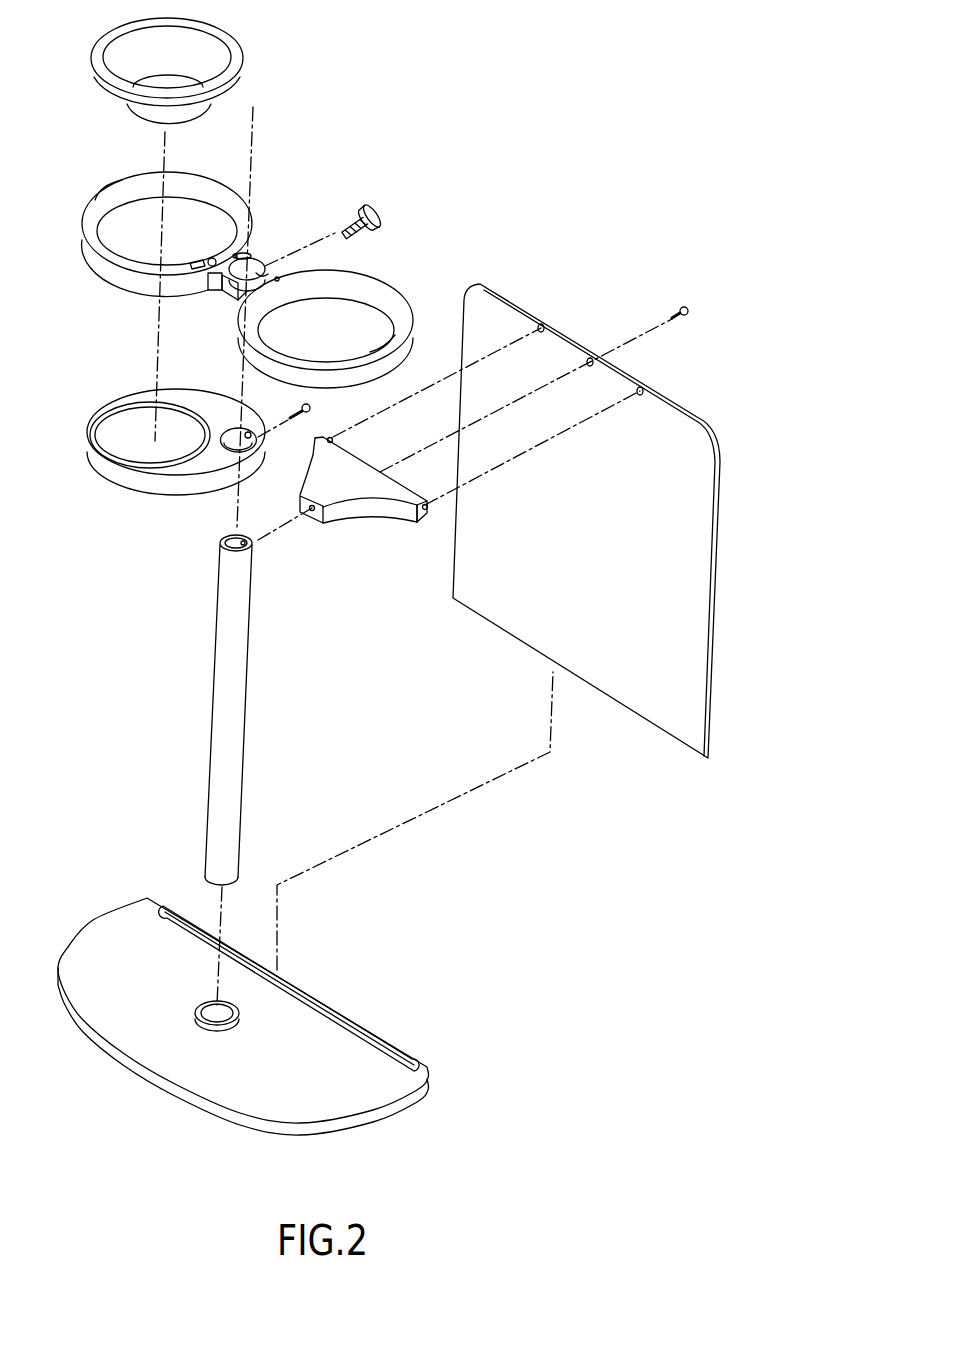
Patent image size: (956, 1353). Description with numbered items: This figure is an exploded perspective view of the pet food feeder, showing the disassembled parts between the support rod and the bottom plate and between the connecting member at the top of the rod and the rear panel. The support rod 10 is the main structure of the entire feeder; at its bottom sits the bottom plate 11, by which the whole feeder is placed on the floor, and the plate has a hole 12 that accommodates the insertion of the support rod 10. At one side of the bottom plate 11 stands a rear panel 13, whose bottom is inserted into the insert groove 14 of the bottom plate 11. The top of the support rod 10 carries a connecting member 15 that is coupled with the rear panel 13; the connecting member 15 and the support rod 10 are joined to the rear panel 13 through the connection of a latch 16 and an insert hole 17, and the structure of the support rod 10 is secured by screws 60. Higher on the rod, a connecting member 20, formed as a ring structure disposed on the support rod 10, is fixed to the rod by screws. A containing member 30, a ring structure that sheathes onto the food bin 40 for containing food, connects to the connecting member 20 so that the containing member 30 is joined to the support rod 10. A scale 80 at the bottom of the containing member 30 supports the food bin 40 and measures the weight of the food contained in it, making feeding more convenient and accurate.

The support rod 10 is at (225, 734).
The bottom plate 11 is at (377, 1093).
The hole 12 is at (195, 1012).
The rear panel 13 is at (696, 601).
The insert groove 14 is at (357, 1027).
The connecting member 15 is at (367, 508).
The latch 16 is at (330, 437).
The insert hole 17 is at (544, 325).
The connecting member 20 is at (260, 262).
The containing member 30 is at (100, 258).
The food bin 40 is at (130, 47).
The screws 60 is at (380, 200).
The scale 80 is at (105, 467).